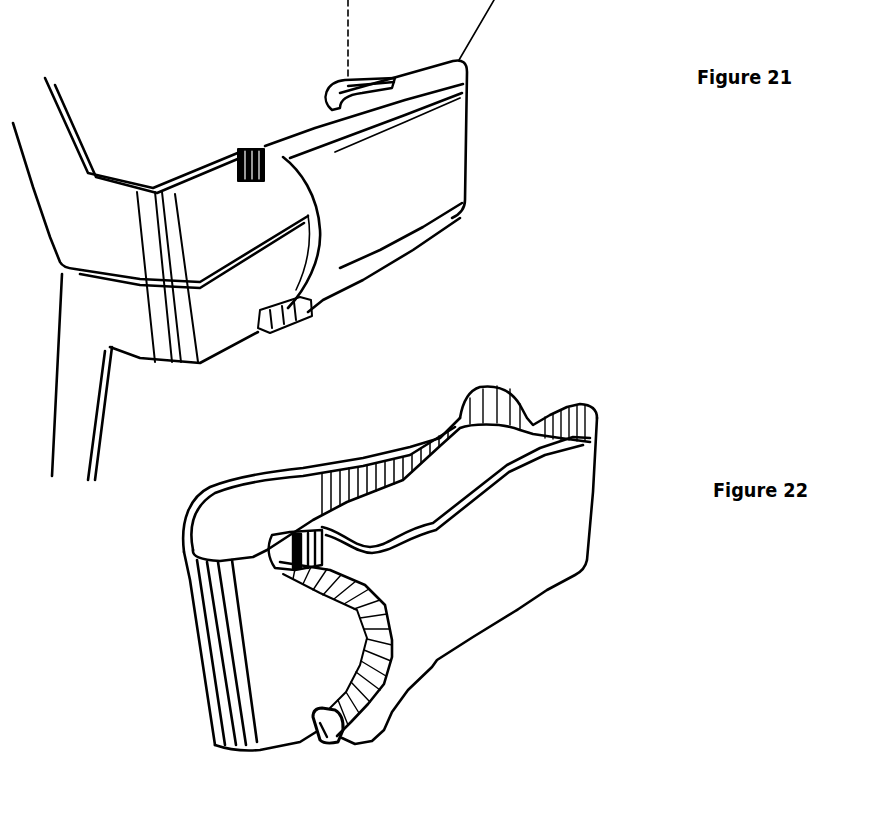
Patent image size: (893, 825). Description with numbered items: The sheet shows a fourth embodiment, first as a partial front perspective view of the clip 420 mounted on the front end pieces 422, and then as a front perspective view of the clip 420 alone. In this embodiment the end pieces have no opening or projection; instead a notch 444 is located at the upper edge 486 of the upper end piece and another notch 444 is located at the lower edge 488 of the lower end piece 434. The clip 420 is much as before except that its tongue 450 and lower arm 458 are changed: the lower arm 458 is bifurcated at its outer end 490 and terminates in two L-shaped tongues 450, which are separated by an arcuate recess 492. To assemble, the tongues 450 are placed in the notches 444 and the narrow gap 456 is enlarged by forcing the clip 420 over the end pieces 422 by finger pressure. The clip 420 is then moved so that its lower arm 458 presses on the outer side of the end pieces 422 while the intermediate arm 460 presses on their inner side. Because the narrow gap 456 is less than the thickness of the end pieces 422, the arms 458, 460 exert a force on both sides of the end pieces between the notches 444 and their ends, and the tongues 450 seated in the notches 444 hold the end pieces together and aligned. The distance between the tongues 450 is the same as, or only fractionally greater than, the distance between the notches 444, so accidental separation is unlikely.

In FIG. 21, the clip 420 is at (443, 158).
In FIG. 21, the front end pieces 422 is at (127, 115).
In FIG. 21, the lower end piece 434 is at (423, 227).
In FIG. 21, the notch 444 is at (250, 148).
In FIG. 21, the upper edge 486 is at (311, 125).
In FIG. 21, the lower edge 488 is at (208, 362).
In FIG. 22, the tongue 450 is at (280, 548).
In FIG. 22, the narrow gap 456 is at (490, 453).
In FIG. 22, the lower arm 458 is at (490, 587).
In FIG. 22, the intermediate arm 460 is at (357, 460).
In FIG. 22, the outer end 490 is at (407, 653).
In FIG. 22, the arcuate recess 492 is at (343, 632).